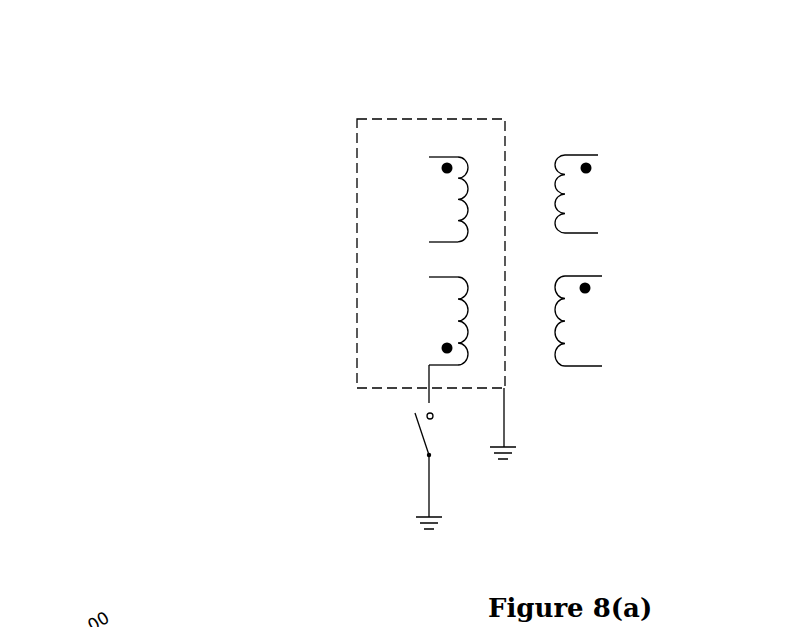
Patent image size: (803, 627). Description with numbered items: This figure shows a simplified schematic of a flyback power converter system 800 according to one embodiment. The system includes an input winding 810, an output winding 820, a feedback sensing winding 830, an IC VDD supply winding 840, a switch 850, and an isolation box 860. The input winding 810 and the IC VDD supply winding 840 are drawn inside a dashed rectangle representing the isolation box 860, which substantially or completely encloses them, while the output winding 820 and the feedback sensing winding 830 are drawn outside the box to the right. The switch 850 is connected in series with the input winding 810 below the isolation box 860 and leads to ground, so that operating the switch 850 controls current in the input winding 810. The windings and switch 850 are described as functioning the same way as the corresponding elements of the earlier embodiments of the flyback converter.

The flyback power converter system 800 is at (82, 68).
The input winding 810 is at (474, 287).
The output winding 820 is at (565, 235).
The feedback sensing winding 830 is at (562, 361).
The IC VDD supply winding 840 is at (472, 164).
The switch 850 is at (419, 446).
The isolation box 860 is at (437, 119).